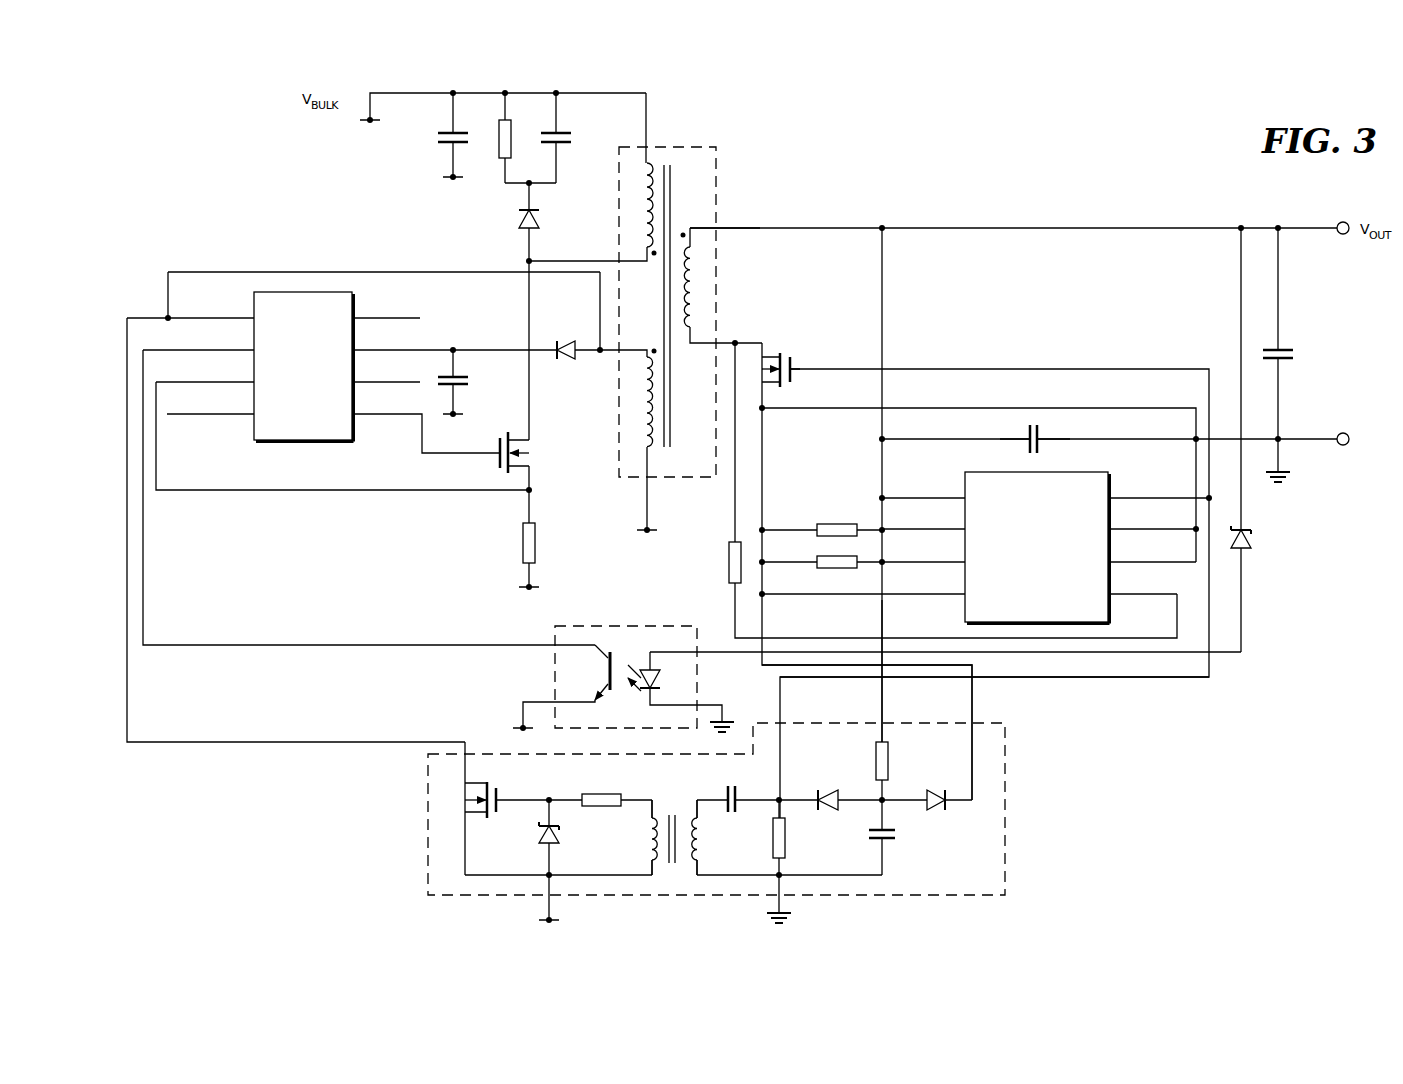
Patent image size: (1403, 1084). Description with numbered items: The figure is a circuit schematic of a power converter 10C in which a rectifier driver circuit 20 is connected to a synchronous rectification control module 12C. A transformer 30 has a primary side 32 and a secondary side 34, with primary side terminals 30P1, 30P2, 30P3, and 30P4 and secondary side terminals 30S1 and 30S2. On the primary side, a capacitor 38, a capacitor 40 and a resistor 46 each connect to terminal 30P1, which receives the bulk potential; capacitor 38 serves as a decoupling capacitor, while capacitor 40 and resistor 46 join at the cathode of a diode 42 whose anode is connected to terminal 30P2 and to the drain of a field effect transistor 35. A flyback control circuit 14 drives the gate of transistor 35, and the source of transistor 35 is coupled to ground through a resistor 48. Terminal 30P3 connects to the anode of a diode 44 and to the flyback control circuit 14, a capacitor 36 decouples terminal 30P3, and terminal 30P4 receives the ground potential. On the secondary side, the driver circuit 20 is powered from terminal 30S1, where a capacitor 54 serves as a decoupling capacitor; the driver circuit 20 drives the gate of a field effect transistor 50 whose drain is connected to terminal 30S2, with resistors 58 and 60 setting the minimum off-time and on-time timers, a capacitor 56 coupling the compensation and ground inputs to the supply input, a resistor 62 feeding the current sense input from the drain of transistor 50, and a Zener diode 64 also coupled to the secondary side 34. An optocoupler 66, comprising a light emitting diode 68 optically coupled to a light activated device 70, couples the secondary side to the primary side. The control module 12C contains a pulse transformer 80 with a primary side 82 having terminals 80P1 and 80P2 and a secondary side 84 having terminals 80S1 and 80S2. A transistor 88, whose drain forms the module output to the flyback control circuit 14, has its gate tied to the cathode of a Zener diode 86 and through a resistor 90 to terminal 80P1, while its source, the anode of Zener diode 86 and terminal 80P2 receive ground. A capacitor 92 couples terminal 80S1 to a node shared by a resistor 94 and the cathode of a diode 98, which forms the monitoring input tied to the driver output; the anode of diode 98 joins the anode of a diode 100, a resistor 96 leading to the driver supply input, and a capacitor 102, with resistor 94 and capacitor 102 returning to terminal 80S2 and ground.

The power converter 10C is at (1229, 178).
The synchronous rectification control module 12C is at (427, 847).
The flyback control circuit 14 is at (281, 443).
The rectifier driver circuit 20 is at (1084, 474).
The transformer 30 is at (687, 147).
The primary side terminal 30P1 is at (631, 101).
The primary side terminal 30P2 is at (613, 258).
The primary side terminal 30P3 is at (605, 360).
The primary side terminal 30P4 is at (645, 501).
The secondary side terminal 30S1 is at (727, 228).
The secondary side terminal 30S2 is at (727, 343).
The primary side 32 is at (392, 197).
The secondary side 34 is at (804, 199).
The field effect transistor 35 is at (516, 452).
The energy storage element 36 is at (469, 380).
The energy storage element 38 is at (437, 134).
The energy storage element 40 is at (565, 142).
The diode 42 is at (518, 212).
The diode 44 is at (558, 341).
The impedance element 46 is at (509, 132).
The impedance element 48 is at (523, 542).
The field effect transistor 50 is at (793, 358).
The energy storage element 54 is at (1285, 350).
The energy storage element 56 is at (1028, 438).
The impedance element 58 is at (820, 524).
The impedance element 60 is at (818, 569).
The impedance element 62 is at (721, 574).
The Zener diode 64 is at (1250, 531).
The optocoupler 66 is at (660, 627).
The light emitting diode 68 is at (648, 695).
The light activated device 70 is at (611, 657).
The pulse transformer 80 is at (674, 847).
The primary side terminal 80P1 is at (641, 808).
The primary side terminal 80P2 is at (641, 875).
The secondary side terminal 80S1 is at (708, 809).
The secondary side terminal 80S2 is at (707, 873).
The primary side 82 is at (604, 885).
The secondary side 84 is at (706, 796).
The Zener diode 86 is at (548, 827).
The transistor 88 is at (498, 790).
The impedance element 90 is at (600, 794).
The energy storage element 92 is at (731, 787).
The impedance element 94 is at (789, 838).
The impedance element 96 is at (889, 758).
The diode 98 is at (822, 790).
The diode 100 is at (946, 809).
The energy storage element 102 is at (896, 839).